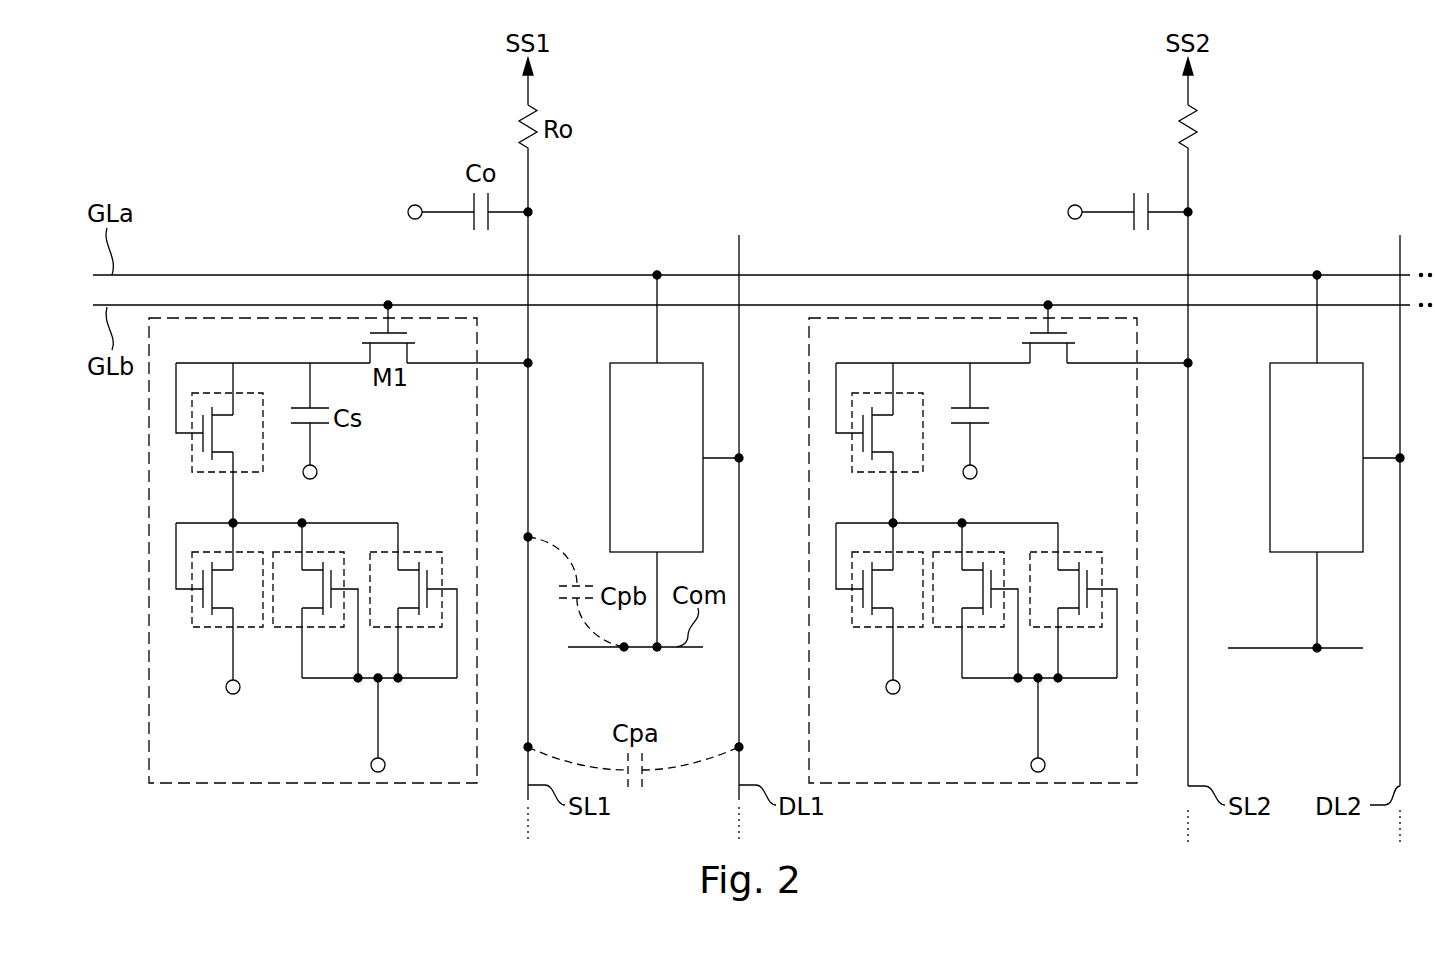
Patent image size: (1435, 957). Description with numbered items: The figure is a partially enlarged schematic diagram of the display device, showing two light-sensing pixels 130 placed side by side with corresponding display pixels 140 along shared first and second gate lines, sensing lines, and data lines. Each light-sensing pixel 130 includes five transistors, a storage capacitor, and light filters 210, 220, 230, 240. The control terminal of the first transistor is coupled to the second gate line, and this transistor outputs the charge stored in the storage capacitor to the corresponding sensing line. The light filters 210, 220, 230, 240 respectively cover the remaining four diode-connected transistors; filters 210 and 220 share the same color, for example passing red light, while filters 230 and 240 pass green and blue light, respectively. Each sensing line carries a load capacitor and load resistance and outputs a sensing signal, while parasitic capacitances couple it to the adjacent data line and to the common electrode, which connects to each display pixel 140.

The light-sensing pixel 130 is at (149, 508).
The display pixel 140 is at (623, 363).
The light filter 210 is at (192, 452).
The light filter 220 is at (192, 628).
The light filter 230 is at (273, 628).
The light filter 240 is at (420, 552).